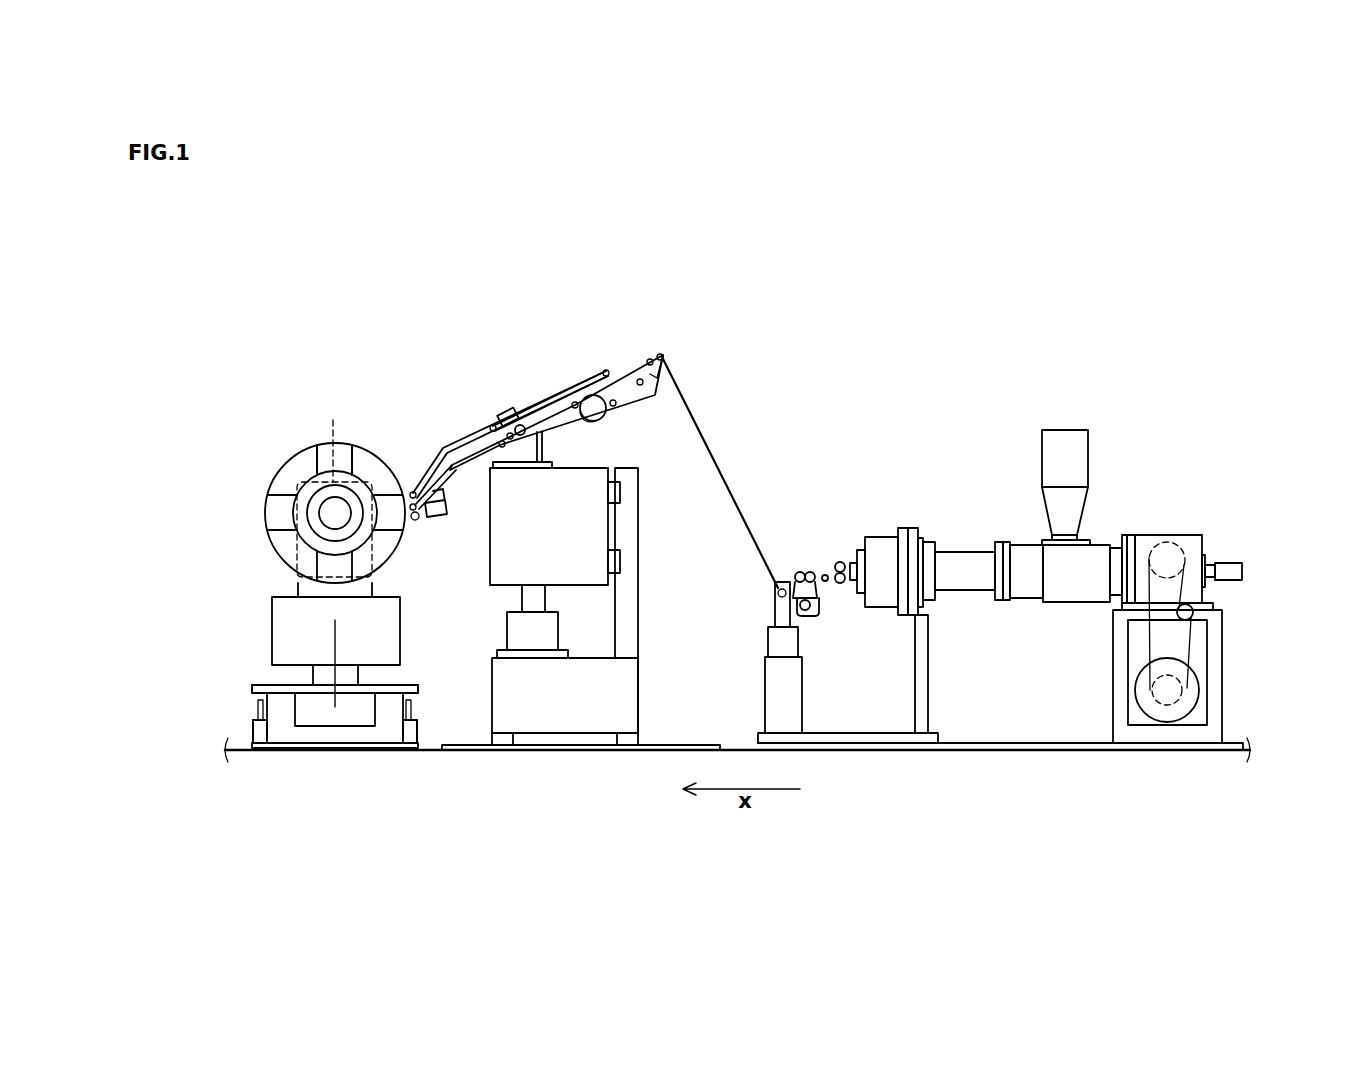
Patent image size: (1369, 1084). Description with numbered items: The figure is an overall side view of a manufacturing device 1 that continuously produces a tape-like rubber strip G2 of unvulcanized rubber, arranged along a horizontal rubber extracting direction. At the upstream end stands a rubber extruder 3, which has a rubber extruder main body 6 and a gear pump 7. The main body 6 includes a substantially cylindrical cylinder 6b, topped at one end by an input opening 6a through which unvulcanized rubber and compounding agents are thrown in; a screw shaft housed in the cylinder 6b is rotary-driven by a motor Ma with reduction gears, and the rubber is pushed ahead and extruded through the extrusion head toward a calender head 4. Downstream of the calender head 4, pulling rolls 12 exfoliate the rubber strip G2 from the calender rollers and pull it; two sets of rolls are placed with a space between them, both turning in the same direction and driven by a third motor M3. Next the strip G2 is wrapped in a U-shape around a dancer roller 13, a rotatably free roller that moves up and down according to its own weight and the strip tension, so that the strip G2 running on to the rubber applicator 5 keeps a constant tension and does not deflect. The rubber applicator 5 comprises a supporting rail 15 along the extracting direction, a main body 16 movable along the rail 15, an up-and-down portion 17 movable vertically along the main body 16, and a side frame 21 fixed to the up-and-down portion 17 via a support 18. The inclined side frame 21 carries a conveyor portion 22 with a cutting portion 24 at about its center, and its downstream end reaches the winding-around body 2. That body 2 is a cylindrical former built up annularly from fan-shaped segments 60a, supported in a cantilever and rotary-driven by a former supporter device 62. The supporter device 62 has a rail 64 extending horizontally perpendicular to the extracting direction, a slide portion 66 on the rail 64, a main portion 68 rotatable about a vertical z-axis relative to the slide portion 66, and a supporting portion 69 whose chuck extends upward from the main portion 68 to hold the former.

The manufacturing device 1 is at (884, 343).
The winding-around body 2 is at (298, 444).
The rubber extruder 3 is at (945, 392).
The calender head 4 is at (842, 553).
The rubber applicator 5 is at (614, 348).
The rubber extruder main body 6 is at (985, 540).
The input opening 6a is at (1085, 452).
The cylinder 6b is at (968, 580).
The gear pump 7 is at (880, 537).
The pulling rolls 12 is at (805, 565).
The dancer roller 13 is at (776, 586).
The supporting rail 15 is at (578, 733).
The main body 16 is at (507, 710).
The up-and-down portion 17 is at (497, 485).
The support 18 is at (550, 448).
The side frame 21 is at (672, 368).
The conveyor portion 22 is at (566, 372).
The cutting portion 24 is at (505, 405).
The fan-shaped segments 60a is at (280, 482).
The former supporter device 62 is at (258, 627).
The rail 64 is at (257, 730).
The slide portion 66 is at (265, 685).
The main portion 68 is at (280, 613).
The supporting portion 69 is at (334, 440).
The vertical z-axis z is at (335, 707).
The rubber strip G2 is at (700, 420).
The third motor M3 is at (808, 612).
The motor with reduction gears Ma is at (1188, 683).